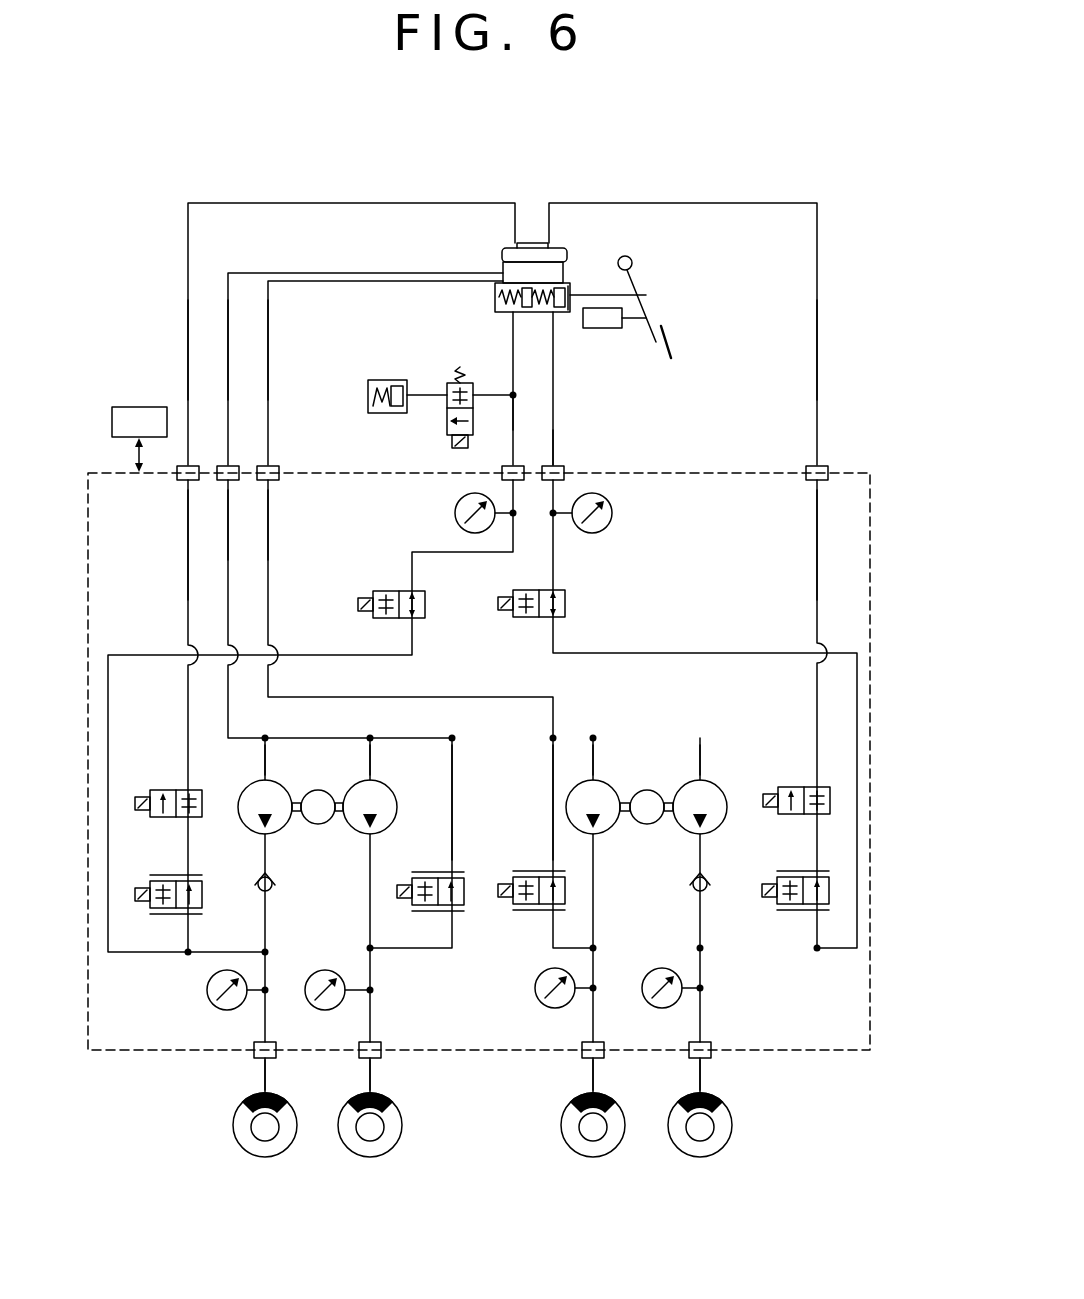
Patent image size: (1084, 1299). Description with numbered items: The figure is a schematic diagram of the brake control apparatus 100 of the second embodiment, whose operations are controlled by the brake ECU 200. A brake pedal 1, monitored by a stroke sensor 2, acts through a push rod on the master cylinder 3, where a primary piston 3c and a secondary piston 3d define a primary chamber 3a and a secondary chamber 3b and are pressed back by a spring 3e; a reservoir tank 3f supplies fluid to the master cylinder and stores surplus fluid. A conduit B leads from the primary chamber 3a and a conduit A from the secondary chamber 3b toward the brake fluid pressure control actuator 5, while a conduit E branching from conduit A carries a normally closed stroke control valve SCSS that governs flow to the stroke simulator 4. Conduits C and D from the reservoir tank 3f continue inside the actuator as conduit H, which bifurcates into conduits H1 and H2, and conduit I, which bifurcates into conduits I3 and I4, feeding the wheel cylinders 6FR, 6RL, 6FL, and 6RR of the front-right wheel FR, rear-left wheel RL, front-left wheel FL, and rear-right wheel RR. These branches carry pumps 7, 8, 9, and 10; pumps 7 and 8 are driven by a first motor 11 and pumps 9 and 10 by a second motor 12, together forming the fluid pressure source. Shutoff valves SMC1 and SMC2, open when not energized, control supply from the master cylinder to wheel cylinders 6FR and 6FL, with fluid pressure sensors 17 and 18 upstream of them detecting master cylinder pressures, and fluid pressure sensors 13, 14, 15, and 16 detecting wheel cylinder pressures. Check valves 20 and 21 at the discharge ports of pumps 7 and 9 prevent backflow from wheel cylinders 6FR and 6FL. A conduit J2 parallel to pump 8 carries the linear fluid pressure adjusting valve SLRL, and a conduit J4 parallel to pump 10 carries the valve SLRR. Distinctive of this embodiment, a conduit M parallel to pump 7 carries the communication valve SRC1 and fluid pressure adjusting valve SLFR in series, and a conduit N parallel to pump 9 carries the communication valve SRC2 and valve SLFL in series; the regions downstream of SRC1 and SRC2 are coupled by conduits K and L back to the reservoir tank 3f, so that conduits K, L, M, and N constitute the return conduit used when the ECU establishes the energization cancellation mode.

The brake control apparatus 100 is at (797, 170).
The brake ECU 200 is at (132, 407).
The brake pedal 1 is at (672, 350).
The stroke sensor 2 is at (615, 330).
The master cylinder 3 is at (573, 261).
The primary chamber 3a is at (553, 316).
The secondary chamber 3b is at (497, 322).
The primary piston 3c is at (572, 291).
The secondary piston 3d is at (513, 335).
The spring 3e is at (545, 313).
The reservoir tank 3f is at (527, 240).
The stroke simulator 4 is at (388, 380).
The brake fluid pressure control actuator 5 is at (702, 471).
The pump 7 is at (275, 834).
The pump 8 is at (380, 834).
The pump 9 is at (710, 834).
The pump 10 is at (600, 834).
The first motor 11 is at (318, 825).
The second motor 12 is at (648, 825).
The fluid pressure sensor 13 is at (212, 1005).
The fluid pressure sensor 14 is at (310, 1005).
The fluid pressure sensor 15 is at (540, 1003).
The fluid pressure sensor 16 is at (648, 1003).
The fluid pressure sensor 17 is at (612, 513).
The fluid pressure sensor 18 is at (455, 513).
The check valve 20 is at (273, 890).
The check valve 21 is at (692, 890).
The wheel cylinder 6FR is at (280, 1090).
The wheel cylinder 6RL is at (385, 1090).
The wheel cylinder 6RR is at (608, 1090).
The wheel cylinder 6FL is at (715, 1090).
The stroke control valve SCSS is at (447, 421).
The shutoff valve SMC1 is at (412, 591).
The shutoff valve SMC2 is at (553, 590).
The communication valve SRC1 is at (148, 790).
The communication valve SRC2 is at (768, 787).
The fluid pressure adjusting valve SLFR is at (145, 910).
The fluid pressure adjusting valve SLRL is at (405, 907).
The fluid pressure adjusting valve SLRR is at (508, 906).
The fluid pressure adjusting valve SLFL is at (783, 906).
The conduit A is at (513, 418).
The conduit B is at (553, 447).
The conduit C is at (325, 272).
The conduit D is at (325, 282).
The conduit E is at (497, 398).
The conduit K is at (350, 203).
The conduit L is at (680, 203).
The conduit I is at (268, 505).
The conduit H is at (228, 542).
The conduit M is at (188, 576).
The conduit N is at (817, 560).
The conduit H1 is at (265, 765).
The conduit H2 is at (370, 765).
The conduit J2 is at (452, 770).
The conduit J4 is at (553, 838).
The conduit I4 is at (593, 755).
The conduit I3 is at (700, 755).
The front-right wheel FR is at (265, 1158).
The rear-left wheel RL is at (372, 1158).
The rear-right wheel RR is at (593, 1158).
The front-left wheel FL is at (700, 1158).